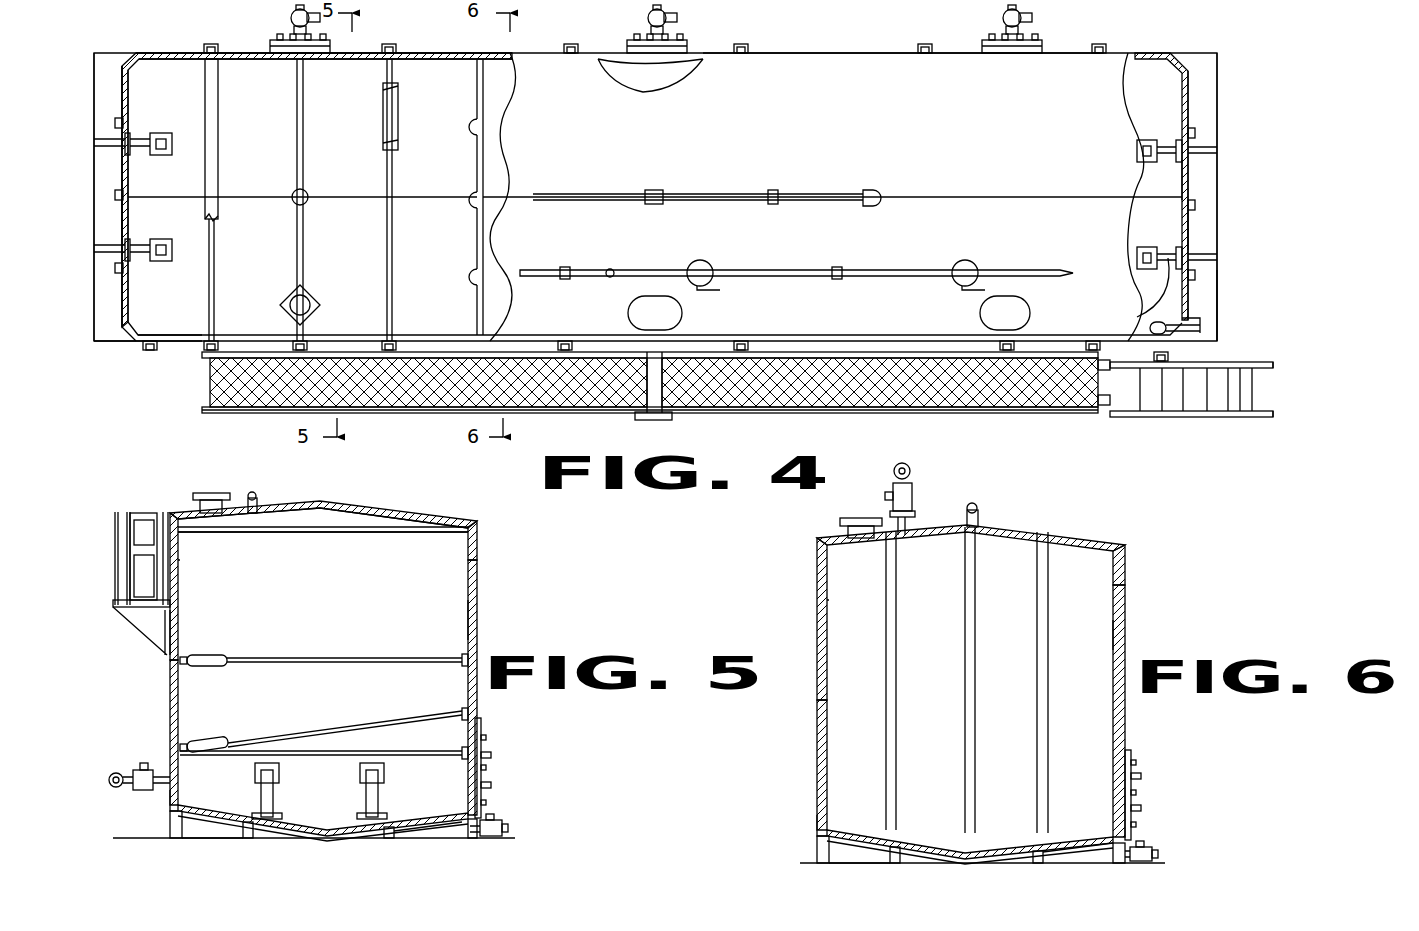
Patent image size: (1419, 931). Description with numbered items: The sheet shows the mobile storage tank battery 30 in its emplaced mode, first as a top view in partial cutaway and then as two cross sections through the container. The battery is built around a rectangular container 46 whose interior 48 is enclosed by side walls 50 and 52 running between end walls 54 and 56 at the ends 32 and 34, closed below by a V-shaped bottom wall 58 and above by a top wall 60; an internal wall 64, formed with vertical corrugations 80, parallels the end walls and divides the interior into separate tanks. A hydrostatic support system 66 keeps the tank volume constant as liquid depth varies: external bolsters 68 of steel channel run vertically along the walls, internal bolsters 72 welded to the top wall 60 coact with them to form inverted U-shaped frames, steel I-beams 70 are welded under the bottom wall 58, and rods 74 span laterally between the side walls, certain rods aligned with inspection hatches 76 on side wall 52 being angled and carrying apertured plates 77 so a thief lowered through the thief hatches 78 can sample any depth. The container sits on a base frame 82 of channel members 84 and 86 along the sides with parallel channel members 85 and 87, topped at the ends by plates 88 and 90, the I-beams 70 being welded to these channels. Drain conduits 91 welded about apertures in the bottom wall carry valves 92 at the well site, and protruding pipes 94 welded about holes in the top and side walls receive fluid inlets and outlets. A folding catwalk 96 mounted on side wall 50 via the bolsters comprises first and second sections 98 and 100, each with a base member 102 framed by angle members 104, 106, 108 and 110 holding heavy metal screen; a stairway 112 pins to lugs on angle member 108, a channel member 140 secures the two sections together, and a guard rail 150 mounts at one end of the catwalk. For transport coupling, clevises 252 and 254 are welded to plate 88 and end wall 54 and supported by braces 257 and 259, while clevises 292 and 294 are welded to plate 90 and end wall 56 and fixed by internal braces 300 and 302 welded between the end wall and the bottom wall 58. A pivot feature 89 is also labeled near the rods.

In FIG. 4, the mobile storage tank battery 30 is at (1250, 62).
In FIG. 4, the end 32 is at (1190, 226).
In FIG. 4, the end 34 is at (119, 217).
In FIG. 4, the rectangular container 46 is at (828, 53).
In FIG. 5, the rectangular container 46 is at (477, 584).
In FIG. 6, the rectangular container 46 is at (1122, 604).
In FIG. 4, the interior 48 is at (428, 78).
In FIG. 5, the interior 48 is at (412, 558).
In FIG. 6, the interior 48 is at (1000, 555).
In FIG. 4, the side wall 50 is at (187, 352).
In FIG. 5, the side wall 50 is at (170, 685).
In FIG. 6, the side wall 50 is at (822, 742).
In FIG. 4, the side wall 52 is at (360, 50).
In FIG. 5, the side wall 52 is at (470, 617).
In FIG. 6, the side wall 52 is at (1117, 634).
In FIG. 4, the end wall 54 is at (1186, 188).
In FIG. 4, the end wall 56 is at (120, 170).
In FIG. 5, the end wall 56 is at (315, 588).
In FIG. 4, the bottom wall 58 is at (360, 163).
In FIG. 5, the bottom wall 58 is at (294, 834).
In FIG. 6, the bottom wall 58 is at (870, 832).
In FIG. 4, the top wall 60 is at (957, 135).
In FIG. 5, the top wall 60 is at (335, 502).
In FIG. 6, the top wall 60 is at (1073, 538).
In FIG. 4, the internal wall 64 is at (477, 157).
In FIG. 6, the internal wall 64 is at (869, 632).
In FIG. 4, the hydrostatic support system 66 is at (1112, 49).
In FIG. 5, the hydrostatic support system 66 is at (480, 540).
In FIG. 6, the hydrostatic support system 66 is at (1130, 557).
In FIG. 4, the external bolster 68 is at (568, 45).
In FIG. 5, the external bolster 68 is at (170, 717).
In FIG. 6, the external bolster 68 is at (817, 718).
In FIG. 5, the steel I-beam 70 is at (225, 840).
In FIG. 6, the steel I-beam 70 is at (857, 858).
In FIG. 4, the internal bolster 72 is at (215, 113).
In FIG. 5, the internal bolster 72 is at (367, 520).
In FIG. 4, the rod 74 is at (215, 263).
In FIG. 5, the rod 74 is at (310, 659).
In FIG. 4, the inspection hatch 76 is at (282, 42).
In FIG. 5, the inspection hatch 76 is at (482, 741).
In FIG. 6, the inspection hatch 76 is at (1132, 788).
In FIG. 4, the apertured plate 77 is at (318, 303).
In FIG. 5, the apertured plate 77 is at (200, 656).
In FIG. 4, the thief hatch 78 is at (667, 318).
In FIG. 5, the thief hatch 78 is at (213, 493).
In FIG. 6, the thief hatch 78 is at (857, 518).
In FIG. 4, the corrugation 80 is at (488, 128).
In FIG. 6, the corrugation 80 is at (1037, 691).
In FIG. 4, the base frame 82 is at (1220, 293).
In FIG. 5, the base frame 82 is at (168, 826).
In FIG. 6, the base frame 82 is at (813, 841).
In FIG. 5, the channel member 84 is at (182, 840).
In FIG. 6, the channel member 84 is at (813, 850).
In FIG. 5, the channel member 85 is at (247, 840).
In FIG. 6, the channel member 85 is at (903, 840).
In FIG. 5, the channel member 86 is at (468, 840).
In FIG. 6, the channel member 86 is at (1125, 862).
In FIG. 5, the channel member 87 is at (393, 840).
In FIG. 6, the channel member 87 is at (1030, 840).
In FIG. 4, the plate 88 is at (1203, 108).
In FIG. 4, the pivot pin 89 is at (296, 196).
In FIG. 4, the plate 90 is at (104, 70).
In FIG. 5, the drain conduit 91 is at (430, 834).
In FIG. 6, the drain conduit 91 is at (1077, 822).
In FIG. 4, the valve 92 is at (293, 15).
In FIG. 5, the valve 92 is at (495, 824).
In FIG. 6, the valve 92 is at (1148, 848).
In FIG. 4, the protruding pipe 94 is at (145, 352).
In FIG. 5, the protruding pipe 94 is at (255, 500).
In FIG. 6, the protruding pipe 94 is at (912, 517).
In FIG. 4, the folding catwalk 96 is at (240, 421).
In FIG. 5, the folding catwalk 96 is at (110, 538).
In FIG. 4, the first section 98 is at (735, 404).
In FIG. 4, the second section 100 is at (423, 402).
In FIG. 4, the base member 102 is at (1074, 418).
In FIG. 4, the angle member 104 is at (815, 357).
In FIG. 4, the angle member 106 is at (980, 417).
In FIG. 4, the angle member 108 is at (1100, 395).
In FIG. 4, the angle member 110 is at (645, 395).
In FIG. 4, the stairway 112 is at (1242, 417).
In FIG. 4, the channel member 140 is at (652, 420).
In FIG. 5, the guard rail 150 is at (145, 512).
In FIG. 4, the clevis 252 is at (1203, 147).
In FIG. 4, the clevis 254 is at (1203, 270).
In FIG. 4, the brace 257 is at (1167, 150).
In FIG. 4, the brace 259 is at (1140, 312).
In FIG. 4, the clevis 292 is at (107, 255).
In FIG. 4, the clevis 294 is at (112, 133).
In FIG. 4, the internal brace 300 is at (137, 252).
In FIG. 5, the internal brace 300 is at (270, 801).
In FIG. 4, the internal brace 302 is at (142, 140).
In FIG. 5, the internal brace 302 is at (380, 801).